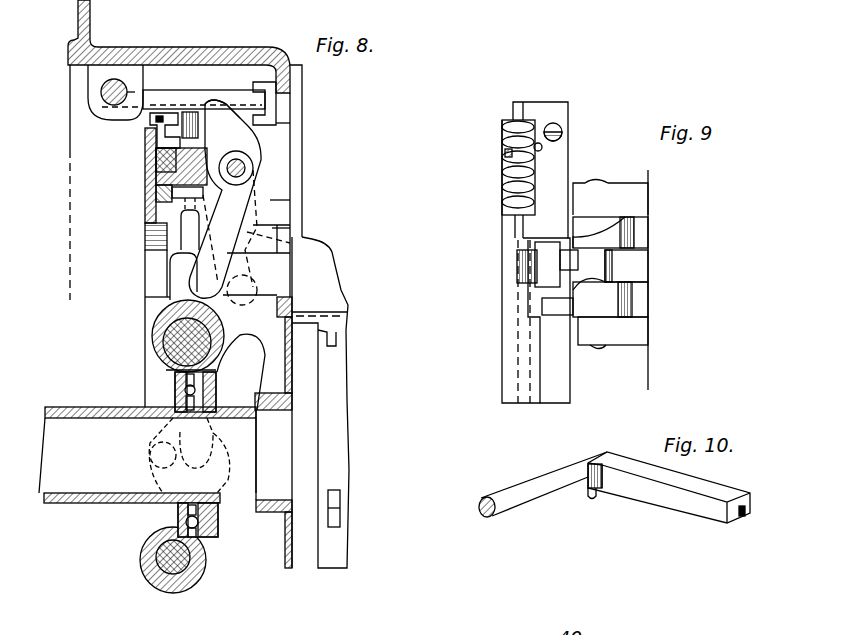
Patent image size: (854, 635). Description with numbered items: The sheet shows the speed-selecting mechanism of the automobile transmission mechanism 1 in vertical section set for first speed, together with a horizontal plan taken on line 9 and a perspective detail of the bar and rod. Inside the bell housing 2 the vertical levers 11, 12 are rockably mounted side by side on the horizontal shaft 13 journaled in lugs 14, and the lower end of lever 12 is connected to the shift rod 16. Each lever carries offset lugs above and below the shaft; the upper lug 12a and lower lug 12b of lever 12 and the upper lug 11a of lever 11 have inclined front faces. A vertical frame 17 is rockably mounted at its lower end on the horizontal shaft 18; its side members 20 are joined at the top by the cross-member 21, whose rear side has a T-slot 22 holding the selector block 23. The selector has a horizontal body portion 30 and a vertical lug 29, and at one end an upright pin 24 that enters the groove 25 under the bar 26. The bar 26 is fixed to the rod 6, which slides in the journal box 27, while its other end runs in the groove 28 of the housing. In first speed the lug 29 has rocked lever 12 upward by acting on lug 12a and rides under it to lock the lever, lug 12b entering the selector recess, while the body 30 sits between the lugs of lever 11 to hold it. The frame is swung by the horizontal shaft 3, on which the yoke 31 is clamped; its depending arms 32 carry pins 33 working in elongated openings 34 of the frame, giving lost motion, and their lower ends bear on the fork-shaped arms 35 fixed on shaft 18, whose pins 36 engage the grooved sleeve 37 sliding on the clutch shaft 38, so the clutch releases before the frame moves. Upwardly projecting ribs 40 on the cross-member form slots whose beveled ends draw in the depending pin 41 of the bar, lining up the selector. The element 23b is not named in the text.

In FIG. 8, the automobile transmission mechanism 1 is at (352, 380).
In FIG. 8, the bell housing 2 is at (282, 52).
In FIG. 8, the horizontal shaft 3 is at (170, 334).
In FIG. 8, the rod 6 is at (122, 80).
In FIG. 10, the rod 6 is at (520, 497).
In FIG. 8, the section line 9- 9 is at (98, 126).
In FIG. 9, the lever 11 is at (640, 301).
In FIG. 9, the upper lug 11a is at (560, 315).
In FIG. 8, the lever 12 is at (246, 230).
In FIG. 9, the lever 12 is at (634, 228).
In FIG. 8, the upper lug 12a is at (212, 140).
In FIG. 9, the upper lug 12a is at (575, 240).
In FIG. 8, the lower lug 12b is at (181, 215).
In FIG. 8, the horizontal shaft 13 is at (246, 167).
In FIG. 9, the horizontal shaft 13 is at (602, 347).
In FIG. 8, the lugs 14 is at (284, 189).
In FIG. 8, the shift rod 16 is at (285, 262).
In FIG. 8, the vertical frame 17 is at (143, 297).
In FIG. 8, the horizontal shaft 18 is at (202, 570).
In FIG. 8, the side members 20 is at (150, 310).
In FIG. 8, the cross-member 21 is at (144, 220).
In FIG. 9, the cross-member 21 is at (512, 382).
In FIG. 8, the T-slot 22 is at (158, 192).
In FIG. 8, the selector block 23 is at (160, 178).
In FIG. 9, the selector block 23 is at (532, 100).
In FIG. 9, the spring seat 23b is at (518, 278).
In FIG. 8, the upright pin 24 is at (190, 112).
In FIG. 9, the upright pin 24 is at (560, 129).
In FIG. 10, the groove 25 is at (745, 514).
In FIG. 8, the bar 26 is at (172, 92).
In FIG. 10, the bar 26 is at (710, 486).
In FIG. 8, the journal box 27 is at (86, 76).
In FIG. 8, the groove 28 is at (268, 102).
In FIG. 8, the vertical lug 29 is at (286, 123).
In FIG. 9, the vertical lug 29 is at (534, 243).
In FIG. 9, the body portion 30 is at (568, 158).
In FIG. 8, the yoke 31 is at (152, 355).
In FIG. 8, the depending arms 32 is at (165, 383).
In FIG. 8, the pins 33 is at (124, 433).
In FIG. 8, the elongated openings 34 is at (217, 392).
In FIG. 8, the fork-shaped arms 35 is at (160, 517).
In FIG. 8, the pins 36 is at (150, 455).
In FIG. 8, the sleeve 37 is at (70, 410).
In FIG. 8, the clutch shaft 38 is at (45, 470).
In FIG. 8, the ribs 40 is at (150, 122).
In FIG. 9, the ribs 40 is at (505, 136).
In FIG. 8, the depending pin 41 is at (156, 138).
In FIG. 9, the depending pin 41 is at (505, 153).
In FIG. 10, the depending pin 41 is at (592, 500).